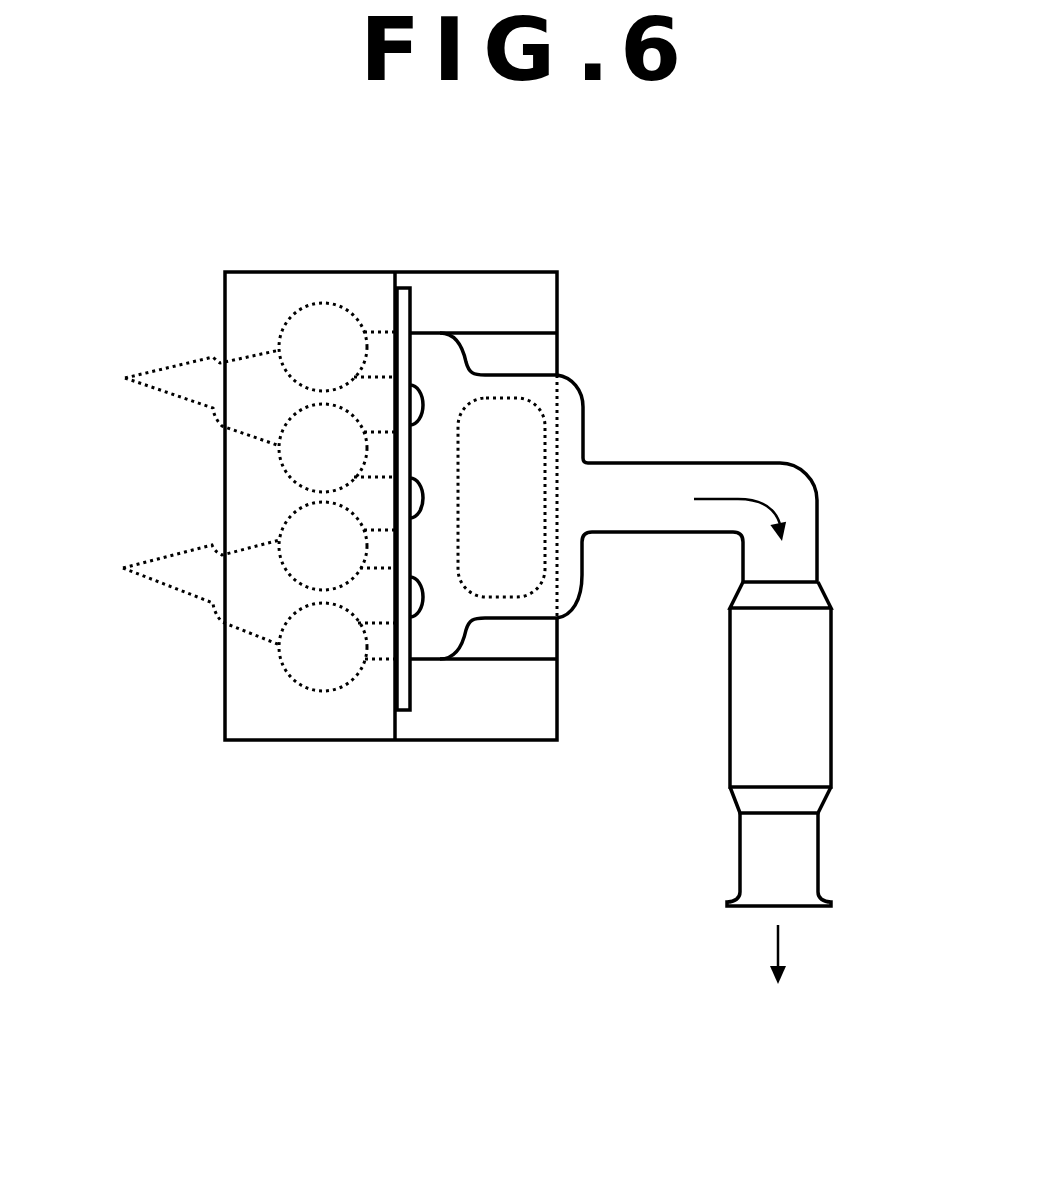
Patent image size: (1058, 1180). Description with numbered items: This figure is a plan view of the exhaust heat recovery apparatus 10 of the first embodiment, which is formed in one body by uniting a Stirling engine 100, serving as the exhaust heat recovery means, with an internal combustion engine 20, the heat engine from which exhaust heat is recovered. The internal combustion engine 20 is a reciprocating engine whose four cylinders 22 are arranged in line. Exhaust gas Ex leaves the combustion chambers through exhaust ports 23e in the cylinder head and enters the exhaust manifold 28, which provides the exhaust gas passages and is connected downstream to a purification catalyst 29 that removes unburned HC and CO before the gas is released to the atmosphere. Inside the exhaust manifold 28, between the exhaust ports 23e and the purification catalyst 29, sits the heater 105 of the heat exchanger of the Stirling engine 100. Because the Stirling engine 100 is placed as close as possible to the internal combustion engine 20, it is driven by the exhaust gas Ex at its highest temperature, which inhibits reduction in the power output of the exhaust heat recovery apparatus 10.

The exhaust heat recovery apparatus 10 is at (222, 172).
The internal combustion engine 20 is at (267, 727).
The cylinders 22 is at (236, 497).
The exhaust ports 23e is at (413, 453).
The exhaust manifold 28 is at (628, 518).
The purification catalyst 29 is at (818, 705).
The Stirling engine 100 is at (528, 360).
The heater 105 is at (525, 462).